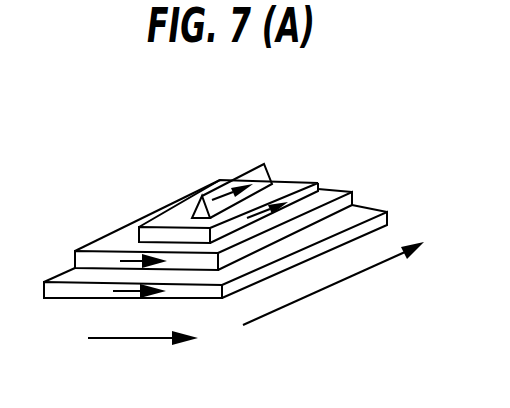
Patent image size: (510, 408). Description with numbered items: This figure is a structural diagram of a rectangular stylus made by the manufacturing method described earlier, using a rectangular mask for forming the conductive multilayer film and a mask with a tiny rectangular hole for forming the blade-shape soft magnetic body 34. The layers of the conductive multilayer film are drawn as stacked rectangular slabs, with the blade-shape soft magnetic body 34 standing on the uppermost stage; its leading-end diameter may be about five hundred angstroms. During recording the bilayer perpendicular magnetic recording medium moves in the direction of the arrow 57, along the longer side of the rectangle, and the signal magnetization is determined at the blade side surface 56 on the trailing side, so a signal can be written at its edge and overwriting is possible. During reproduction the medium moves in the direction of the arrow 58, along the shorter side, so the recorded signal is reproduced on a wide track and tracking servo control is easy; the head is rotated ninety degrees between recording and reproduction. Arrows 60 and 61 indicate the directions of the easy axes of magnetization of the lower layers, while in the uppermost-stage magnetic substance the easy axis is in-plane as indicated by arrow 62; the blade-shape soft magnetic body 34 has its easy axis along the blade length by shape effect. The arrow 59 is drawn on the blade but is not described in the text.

The blade-shape soft magnetic body 34 is at (272, 180).
The blade side surface 56 is at (180, 210).
The arrow indicating medium moving direction during recording 57 is at (333, 283).
The arrow indicating medium moving direction during reproduction 58 is at (143, 352).
The magnetization direction of magnetic body 59 is at (222, 192).
The arrow indicating easy axis of magnetization direction 60 is at (125, 292).
The arrow indicating easy axis of magnetization direction 61 is at (123, 262).
The arrow indicating in-plane easy axis of magnetization 62 is at (249, 222).